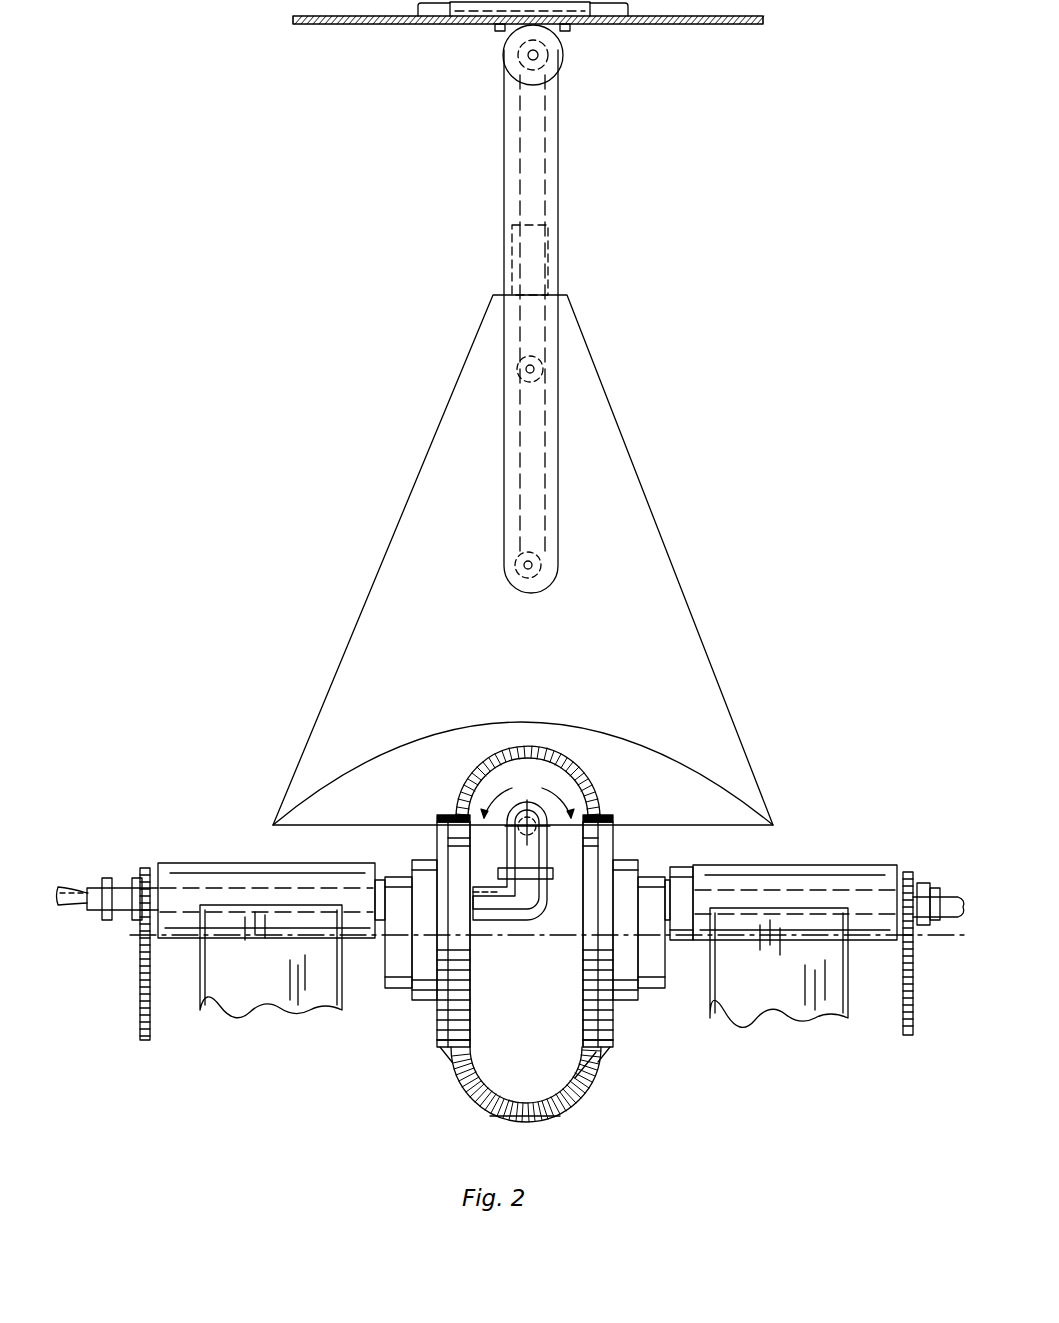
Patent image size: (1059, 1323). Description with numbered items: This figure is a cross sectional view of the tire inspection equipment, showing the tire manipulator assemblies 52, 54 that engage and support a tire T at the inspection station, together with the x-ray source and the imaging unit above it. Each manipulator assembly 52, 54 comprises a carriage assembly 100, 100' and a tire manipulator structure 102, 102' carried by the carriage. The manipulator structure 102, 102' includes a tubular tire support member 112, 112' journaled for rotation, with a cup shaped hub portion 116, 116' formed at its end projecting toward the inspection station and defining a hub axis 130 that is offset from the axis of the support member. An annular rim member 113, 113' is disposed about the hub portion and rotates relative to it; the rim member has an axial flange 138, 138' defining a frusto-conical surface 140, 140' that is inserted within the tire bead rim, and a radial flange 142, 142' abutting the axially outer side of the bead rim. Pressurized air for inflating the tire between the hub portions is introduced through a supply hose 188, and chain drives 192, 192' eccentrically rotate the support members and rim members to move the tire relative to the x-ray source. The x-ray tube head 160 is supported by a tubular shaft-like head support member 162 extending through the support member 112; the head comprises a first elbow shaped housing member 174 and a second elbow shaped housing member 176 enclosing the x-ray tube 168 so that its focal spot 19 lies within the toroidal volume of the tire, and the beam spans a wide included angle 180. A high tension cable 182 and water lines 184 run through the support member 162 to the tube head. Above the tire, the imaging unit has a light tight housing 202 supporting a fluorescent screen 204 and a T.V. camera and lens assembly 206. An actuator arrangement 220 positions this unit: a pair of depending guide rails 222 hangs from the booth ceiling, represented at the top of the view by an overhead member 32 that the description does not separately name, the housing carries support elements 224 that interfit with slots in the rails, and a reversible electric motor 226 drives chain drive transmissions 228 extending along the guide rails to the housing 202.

The support plate 32 is at (690, 26).
The actuator arrangement 220 is at (490, 62).
The reversible electric motor 226 is at (556, 47).
The guide rails 222 is at (559, 202).
The chain drive transmissions 228 is at (546, 134).
The T.V. camera and lens assembly 206 is at (542, 268).
The support elements 224 is at (540, 360).
The light tight housing 202 is at (632, 478).
The fluorescent screen 204 is at (602, 743).
The x-ray tube 168 is at (552, 805).
The included angle 180 is at (527, 797).
The hub axis 130 is at (488, 945).
The axial flange 138 is at (490, 935).
The axial flange 138' is at (565, 934).
The frusto-conical surface 140 is at (526, 1084).
The frusto-conical surface 140' is at (612, 1087).
The tire T is at (505, 1118).
The radial flange 142 is at (428, 1078).
The radial flange 142' is at (649, 1080).
The annular rim member 113 is at (417, 1057).
The annular rim member 113' is at (641, 1062).
The first elbow shaped tubular housing member 174 is at (538, 905).
The second elbow shaped tubular housing member 176 is at (505, 860).
The focal spot 19 is at (545, 842).
The x-ray tube head 160 is at (538, 928).
The hub portion 116 is at (400, 950).
The hub portion 116' is at (651, 955).
The head support member 162 is at (120, 878).
The tire support member 112 is at (362, 876).
The tire support member 112' is at (688, 907).
The tire manipulator structure 102 is at (266, 877).
The tire manipulator structure 102' is at (795, 881).
The carriage assembly 100 is at (271, 961).
The carriage assembly 100' is at (779, 967).
The manipulator assembly 52 is at (270, 1015).
The manipulator assembly 54 is at (748, 1015).
The chain drive 192 is at (116, 954).
The chain drive 192' is at (942, 953).
The water lines 184 is at (72, 885).
The high tension cable 182 is at (68, 902).
The pressurized air supply hose 188 is at (940, 893).